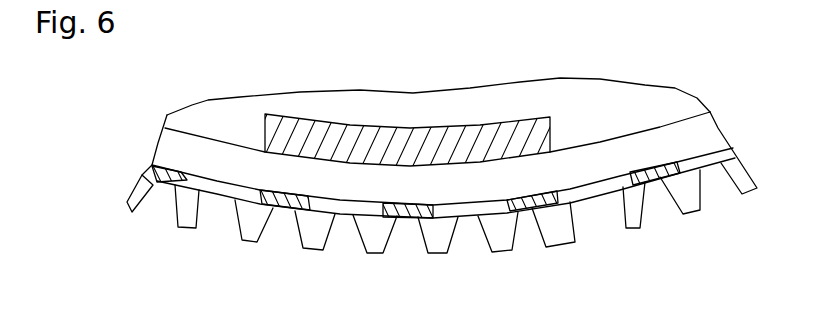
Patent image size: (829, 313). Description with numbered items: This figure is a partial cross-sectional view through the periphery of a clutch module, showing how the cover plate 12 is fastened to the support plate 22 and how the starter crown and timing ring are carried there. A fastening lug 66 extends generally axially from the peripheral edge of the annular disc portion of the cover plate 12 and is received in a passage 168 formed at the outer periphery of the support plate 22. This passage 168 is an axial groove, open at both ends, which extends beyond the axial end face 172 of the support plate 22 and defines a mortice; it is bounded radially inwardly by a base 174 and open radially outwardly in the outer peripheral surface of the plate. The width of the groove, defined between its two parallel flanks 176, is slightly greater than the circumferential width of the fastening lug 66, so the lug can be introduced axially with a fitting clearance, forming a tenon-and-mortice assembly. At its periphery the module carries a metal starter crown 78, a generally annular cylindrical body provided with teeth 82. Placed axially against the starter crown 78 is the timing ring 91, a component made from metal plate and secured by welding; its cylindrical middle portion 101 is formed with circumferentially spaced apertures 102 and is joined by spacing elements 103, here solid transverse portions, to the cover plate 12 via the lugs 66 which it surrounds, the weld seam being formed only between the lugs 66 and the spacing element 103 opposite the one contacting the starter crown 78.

The cover plate 12 is at (330, 118).
The support plate 22 is at (646, 81).
The fastening lug 66 is at (445, 135).
The starter crown 78 is at (299, 254).
The teeth 82 is at (493, 238).
The timing ring 91 is at (259, 173).
The cylindrical middle portion 101 is at (522, 213).
The apertures 102 is at (193, 189).
The spacing elements 103 is at (712, 123).
The passage (groove) 168 is at (504, 128).
The axial end face 172 is at (604, 102).
The base 174 is at (393, 128).
The flanks 176 is at (283, 120).